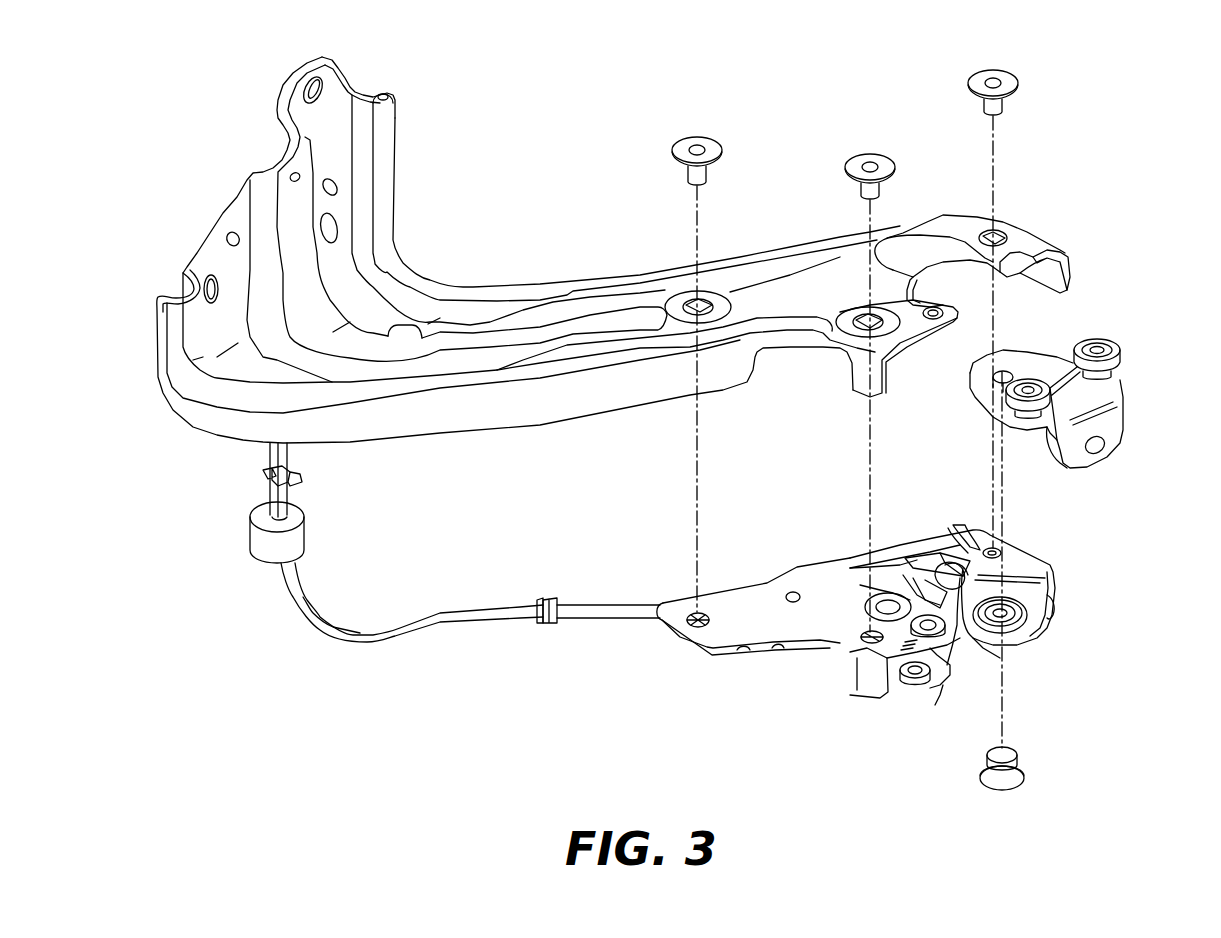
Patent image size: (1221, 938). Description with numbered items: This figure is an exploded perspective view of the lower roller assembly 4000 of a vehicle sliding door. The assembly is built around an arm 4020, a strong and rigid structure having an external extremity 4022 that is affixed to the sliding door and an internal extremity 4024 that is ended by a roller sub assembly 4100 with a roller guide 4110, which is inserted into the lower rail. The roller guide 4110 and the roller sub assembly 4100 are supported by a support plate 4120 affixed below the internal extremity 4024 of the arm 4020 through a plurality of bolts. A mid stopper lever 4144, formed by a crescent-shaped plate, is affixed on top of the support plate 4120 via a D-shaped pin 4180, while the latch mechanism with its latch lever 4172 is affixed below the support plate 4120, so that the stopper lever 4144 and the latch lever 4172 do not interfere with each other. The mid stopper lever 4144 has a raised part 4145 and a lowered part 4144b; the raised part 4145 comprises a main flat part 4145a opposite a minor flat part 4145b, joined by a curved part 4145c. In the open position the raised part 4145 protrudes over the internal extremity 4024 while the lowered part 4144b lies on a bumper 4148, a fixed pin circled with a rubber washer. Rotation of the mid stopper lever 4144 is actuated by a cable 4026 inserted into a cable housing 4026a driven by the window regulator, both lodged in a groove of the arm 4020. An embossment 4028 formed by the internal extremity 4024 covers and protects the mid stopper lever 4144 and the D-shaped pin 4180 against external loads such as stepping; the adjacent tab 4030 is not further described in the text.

The lower roller assembly 4000 is at (620, 106).
The arm 4020 is at (740, 257).
The external extremity 4022 is at (268, 167).
The internal extremity 4024 is at (900, 343).
The cable 4026 is at (832, 653).
The cable housing 4026a is at (590, 617).
The embossment 4028 is at (910, 235).
The clip tab 4030 is at (1023, 253).
The roller sub assembly 4100 is at (1082, 478).
The roller guide 4110 is at (1110, 303).
The support plate 4120 is at (710, 650).
The mid stopper lever 4144 is at (923, 545).
The lowered part 4144b is at (933, 552).
The raised part 4145 is at (1040, 583).
The main flat part 4145a is at (920, 587).
The minor flat part 4145b is at (963, 607).
The curved part 4145c is at (900, 587).
The bumper 4148 is at (973, 637).
The latch lever 4172 is at (943, 683).
The D-shaped pin 4180 is at (963, 558).